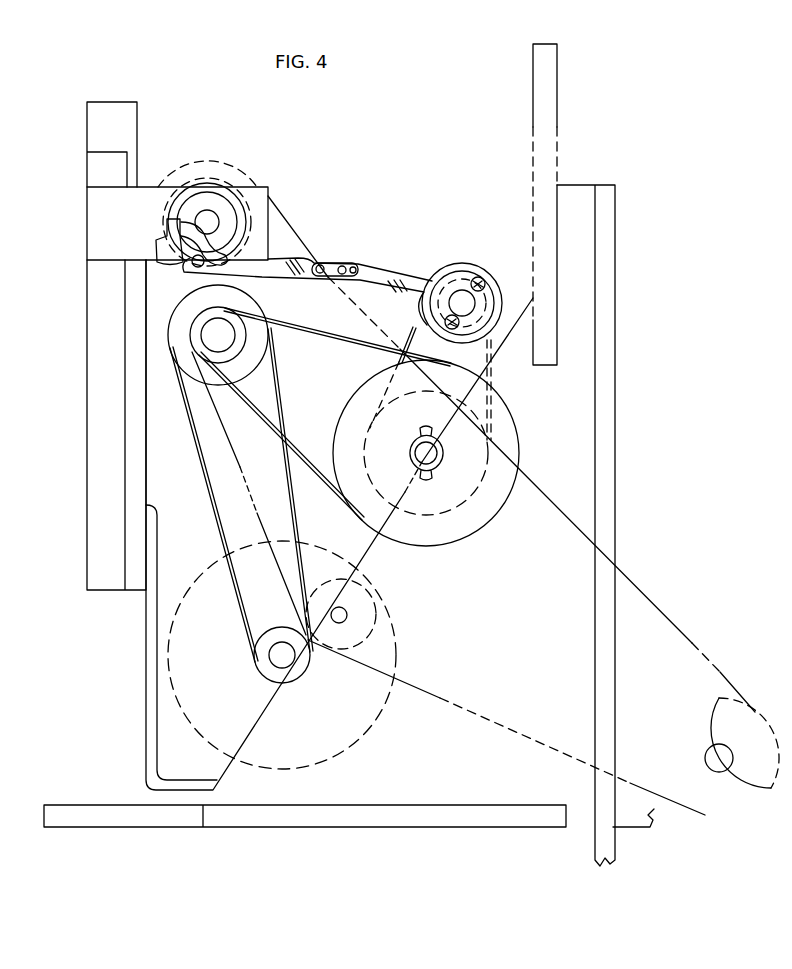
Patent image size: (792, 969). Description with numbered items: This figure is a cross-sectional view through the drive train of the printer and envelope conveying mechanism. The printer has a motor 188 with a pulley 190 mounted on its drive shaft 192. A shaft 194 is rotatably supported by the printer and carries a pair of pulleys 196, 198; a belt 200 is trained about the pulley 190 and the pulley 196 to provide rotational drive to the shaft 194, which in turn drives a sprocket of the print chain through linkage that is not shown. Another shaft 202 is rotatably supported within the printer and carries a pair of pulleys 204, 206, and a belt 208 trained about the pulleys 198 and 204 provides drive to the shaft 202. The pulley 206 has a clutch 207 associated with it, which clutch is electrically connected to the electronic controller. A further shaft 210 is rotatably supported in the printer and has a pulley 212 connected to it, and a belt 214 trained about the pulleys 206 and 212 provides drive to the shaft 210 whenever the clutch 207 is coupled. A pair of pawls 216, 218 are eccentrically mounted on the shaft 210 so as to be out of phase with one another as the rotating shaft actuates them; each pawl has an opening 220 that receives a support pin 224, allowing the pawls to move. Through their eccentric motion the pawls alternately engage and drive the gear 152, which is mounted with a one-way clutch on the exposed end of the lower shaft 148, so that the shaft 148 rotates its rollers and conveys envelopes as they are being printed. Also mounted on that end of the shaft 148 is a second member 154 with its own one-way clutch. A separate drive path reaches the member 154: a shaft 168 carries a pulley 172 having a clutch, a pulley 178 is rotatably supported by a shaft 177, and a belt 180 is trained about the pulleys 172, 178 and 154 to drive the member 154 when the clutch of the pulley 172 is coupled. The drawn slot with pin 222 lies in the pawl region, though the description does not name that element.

The lower shaft 148 is at (215, 215).
The member 152 is at (160, 227).
The member 154 is at (223, 170).
The shaft 168 is at (721, 772).
The pulley 172 is at (753, 710).
The shaft 177 is at (347, 618).
The pulley 178 is at (373, 603).
The belt 180 is at (633, 580).
The motor 188 is at (380, 720).
The pulley 190 is at (260, 668).
The drive shaft 192 is at (291, 661).
The shaft 194 is at (237, 352).
The pulley 196 is at (207, 362).
The pulley 198 is at (242, 332).
The belt 200 is at (208, 487).
The shaft 202 is at (434, 462).
The pulley 204 is at (497, 502).
The pulley 206 is at (455, 532).
The clutch 207 is at (410, 457).
The belt 208 is at (320, 478).
The shaft 210 is at (440, 277).
The pulley 212 is at (483, 293).
The belt 214 is at (485, 362).
The pawl 216 is at (200, 267).
The pawl 218 is at (157, 250).
The opening 220 is at (343, 268).
The pin 222 is at (340, 277).
The support pin 224 is at (312, 263).